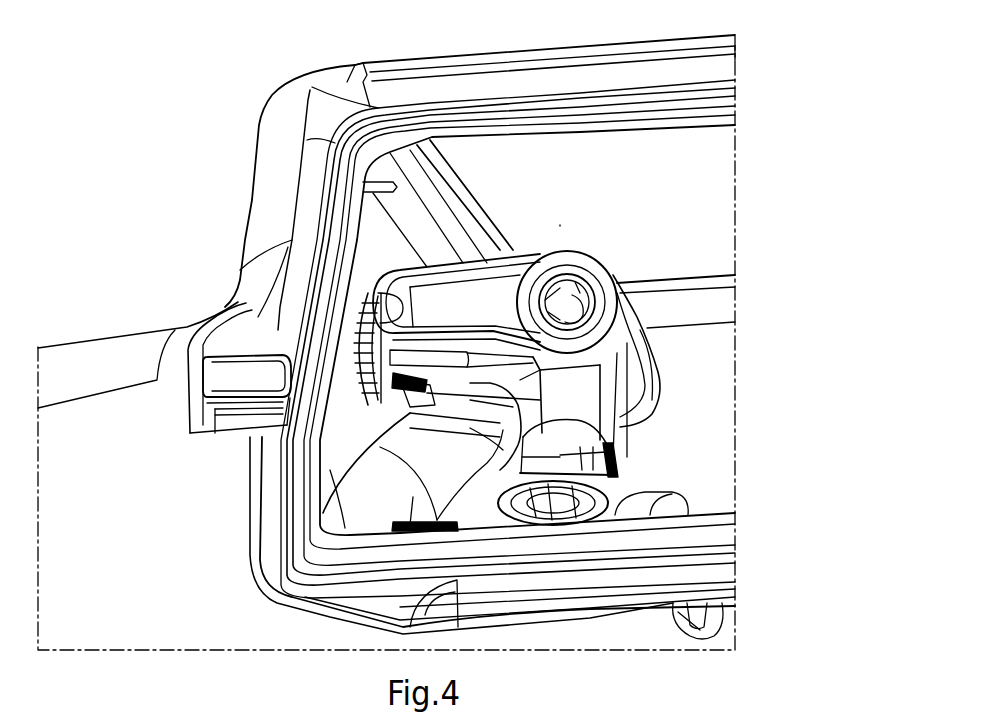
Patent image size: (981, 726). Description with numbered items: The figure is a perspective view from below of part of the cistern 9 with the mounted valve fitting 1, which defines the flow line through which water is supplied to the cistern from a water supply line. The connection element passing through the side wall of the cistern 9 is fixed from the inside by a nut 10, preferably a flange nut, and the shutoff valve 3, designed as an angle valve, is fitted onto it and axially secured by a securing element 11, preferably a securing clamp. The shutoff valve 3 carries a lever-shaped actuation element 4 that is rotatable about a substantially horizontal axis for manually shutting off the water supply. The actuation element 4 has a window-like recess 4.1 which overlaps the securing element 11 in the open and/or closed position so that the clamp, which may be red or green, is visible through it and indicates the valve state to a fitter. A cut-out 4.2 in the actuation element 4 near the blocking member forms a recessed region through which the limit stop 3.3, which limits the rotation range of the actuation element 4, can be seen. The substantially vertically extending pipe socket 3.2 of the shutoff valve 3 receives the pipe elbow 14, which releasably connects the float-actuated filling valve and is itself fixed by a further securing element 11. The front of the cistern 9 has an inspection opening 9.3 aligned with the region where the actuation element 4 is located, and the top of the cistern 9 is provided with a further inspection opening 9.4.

The valve fitting 1 is at (598, 230).
The shutoff valve 3 is at (623, 313).
The pipe socket 3.2 is at (577, 390).
The limit stop 3.3 is at (598, 265).
The actuation element 4 is at (490, 295).
The window-like recess 4.1 is at (398, 312).
The cut-out 4.2 is at (563, 253).
The cistern 9 is at (108, 365).
The inspection opening 9.3 is at (410, 427).
The inspection opening 9.4 is at (697, 170).
The nut 10 is at (370, 400).
The securing element 11 is at (562, 453).
The pipe elbow 14 is at (563, 520).